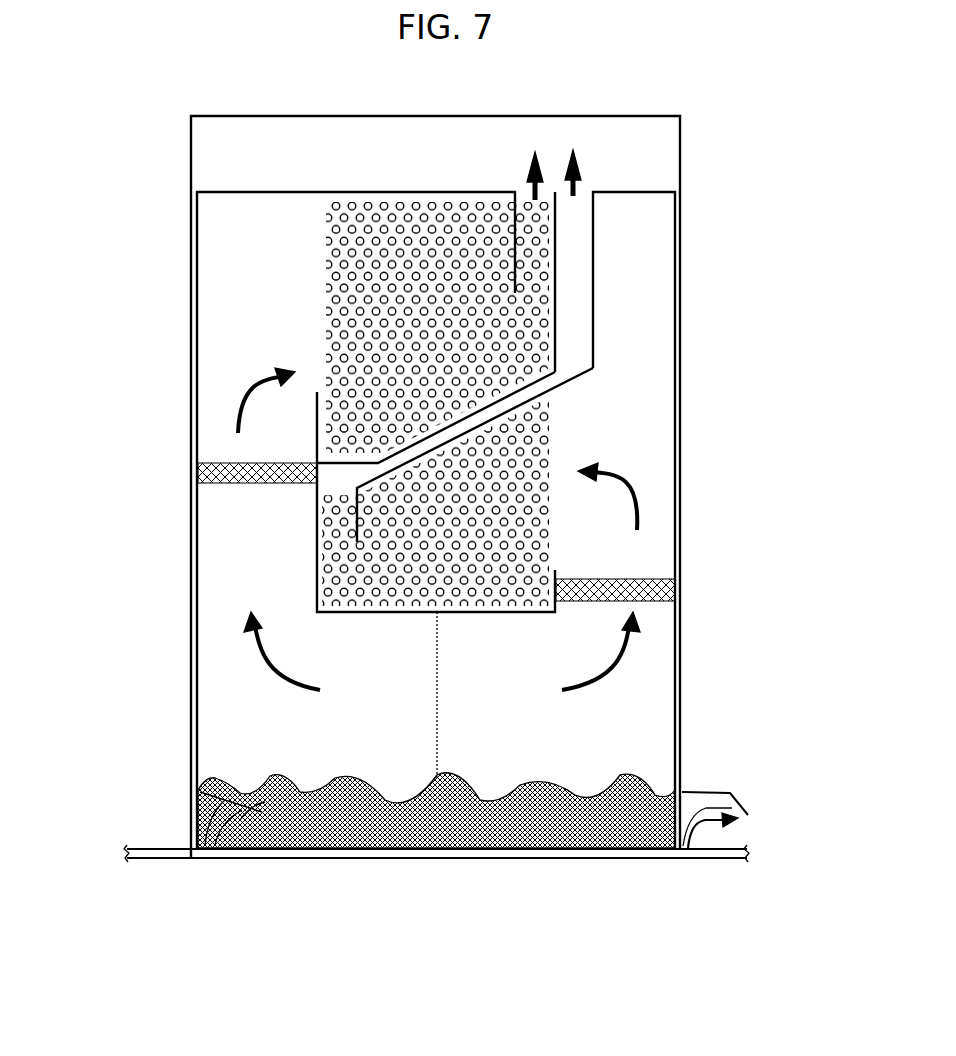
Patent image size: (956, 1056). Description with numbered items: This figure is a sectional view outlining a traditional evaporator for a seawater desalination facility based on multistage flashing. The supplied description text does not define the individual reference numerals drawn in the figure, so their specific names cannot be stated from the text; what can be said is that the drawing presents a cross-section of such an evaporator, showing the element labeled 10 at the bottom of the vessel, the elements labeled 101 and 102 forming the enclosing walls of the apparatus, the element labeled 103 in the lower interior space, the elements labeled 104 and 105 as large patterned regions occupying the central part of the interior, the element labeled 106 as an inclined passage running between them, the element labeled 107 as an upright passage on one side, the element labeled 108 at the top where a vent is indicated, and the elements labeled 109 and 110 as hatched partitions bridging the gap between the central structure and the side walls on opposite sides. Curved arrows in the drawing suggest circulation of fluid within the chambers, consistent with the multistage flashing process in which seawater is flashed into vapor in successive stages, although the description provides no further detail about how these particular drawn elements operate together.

The bulk material 10 is at (360, 852).
The inner housing wall 101 is at (262, 736).
The outer housing 102 is at (676, 752).
The lower chamber 103 is at (437, 760).
The upper filter 104 is at (330, 252).
The lower filter 105 is at (503, 470).
The inclined channel 106 is at (548, 352).
The exhaust duct 107 is at (598, 290).
The vent opening 108 is at (573, 238).
The left seal 109 is at (226, 468).
The right seal 110 is at (655, 577).